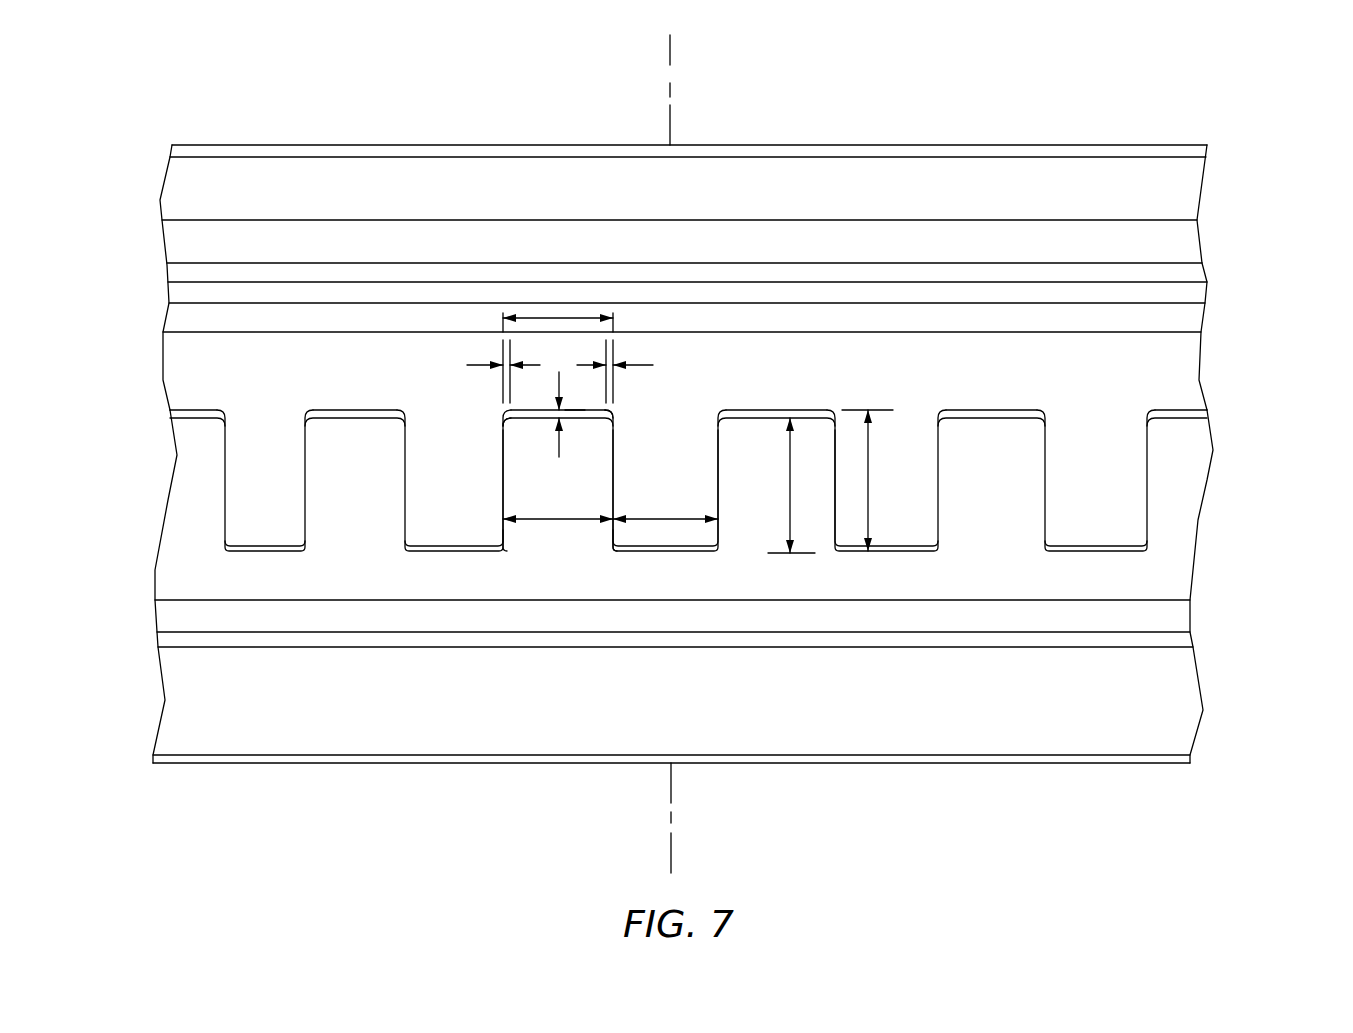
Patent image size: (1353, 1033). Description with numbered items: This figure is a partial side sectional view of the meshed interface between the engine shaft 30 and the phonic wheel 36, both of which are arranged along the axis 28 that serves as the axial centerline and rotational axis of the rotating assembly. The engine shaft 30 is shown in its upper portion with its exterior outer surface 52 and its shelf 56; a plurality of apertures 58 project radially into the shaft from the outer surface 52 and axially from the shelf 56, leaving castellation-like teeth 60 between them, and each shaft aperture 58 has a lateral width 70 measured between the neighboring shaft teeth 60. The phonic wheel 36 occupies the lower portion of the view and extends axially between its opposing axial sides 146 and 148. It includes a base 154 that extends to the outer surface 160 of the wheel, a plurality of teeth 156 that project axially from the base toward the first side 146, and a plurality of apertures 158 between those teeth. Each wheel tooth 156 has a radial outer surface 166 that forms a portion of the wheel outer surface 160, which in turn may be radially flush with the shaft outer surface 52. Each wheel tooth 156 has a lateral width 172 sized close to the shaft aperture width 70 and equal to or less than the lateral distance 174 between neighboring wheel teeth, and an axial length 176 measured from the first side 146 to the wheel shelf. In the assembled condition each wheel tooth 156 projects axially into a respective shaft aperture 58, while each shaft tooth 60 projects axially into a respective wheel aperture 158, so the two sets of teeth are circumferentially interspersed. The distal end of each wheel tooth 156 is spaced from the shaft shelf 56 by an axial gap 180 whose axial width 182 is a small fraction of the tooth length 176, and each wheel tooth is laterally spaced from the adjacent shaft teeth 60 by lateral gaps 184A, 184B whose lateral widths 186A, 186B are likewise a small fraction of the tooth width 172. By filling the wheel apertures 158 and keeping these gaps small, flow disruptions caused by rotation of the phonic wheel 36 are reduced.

The axis 28 is at (672, 63).
The engine shaft 30 is at (740, 277).
The phonic wheel 36 is at (700, 608).
The exterior outer surface 52 is at (1178, 373).
The shelf 56 is at (598, 413).
The apertures 58 is at (516, 419).
The teeth 60 is at (434, 436).
The lateral width 70 is at (545, 318).
The axial side 146 is at (574, 409).
The axial side 148 is at (445, 764).
The base 154 is at (208, 674).
The teeth 156 is at (581, 547).
The apertures 158 is at (445, 555).
The outer surface 160 is at (1165, 585).
The radial outer surface 166 is at (723, 517).
The lateral width 172 is at (560, 520).
The lateral distance 174 is at (653, 517).
The axial length 176 is at (790, 478).
The axial gap 180 is at (523, 421).
The axial width 182 is at (560, 452).
The lateral gap 184A is at (500, 530).
The lateral gap 184B is at (618, 532).
The lateral width 186A is at (485, 365).
The lateral width 186B is at (640, 365).